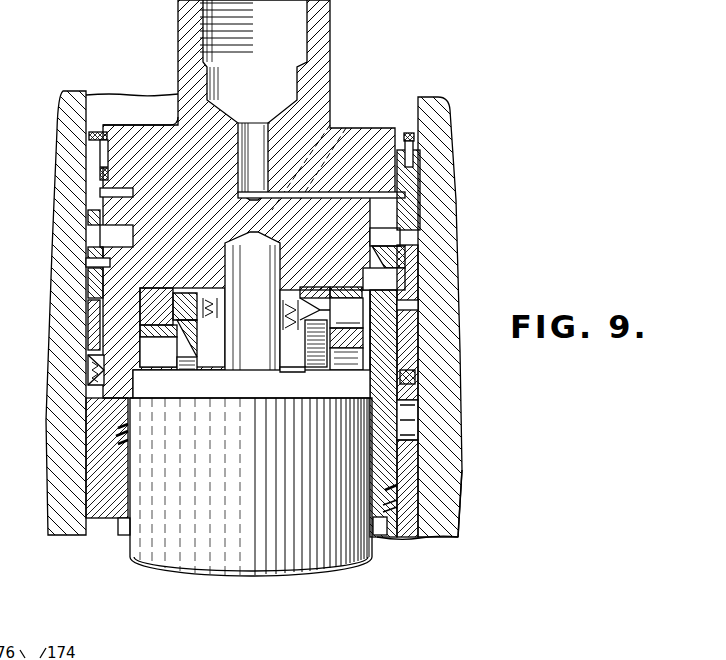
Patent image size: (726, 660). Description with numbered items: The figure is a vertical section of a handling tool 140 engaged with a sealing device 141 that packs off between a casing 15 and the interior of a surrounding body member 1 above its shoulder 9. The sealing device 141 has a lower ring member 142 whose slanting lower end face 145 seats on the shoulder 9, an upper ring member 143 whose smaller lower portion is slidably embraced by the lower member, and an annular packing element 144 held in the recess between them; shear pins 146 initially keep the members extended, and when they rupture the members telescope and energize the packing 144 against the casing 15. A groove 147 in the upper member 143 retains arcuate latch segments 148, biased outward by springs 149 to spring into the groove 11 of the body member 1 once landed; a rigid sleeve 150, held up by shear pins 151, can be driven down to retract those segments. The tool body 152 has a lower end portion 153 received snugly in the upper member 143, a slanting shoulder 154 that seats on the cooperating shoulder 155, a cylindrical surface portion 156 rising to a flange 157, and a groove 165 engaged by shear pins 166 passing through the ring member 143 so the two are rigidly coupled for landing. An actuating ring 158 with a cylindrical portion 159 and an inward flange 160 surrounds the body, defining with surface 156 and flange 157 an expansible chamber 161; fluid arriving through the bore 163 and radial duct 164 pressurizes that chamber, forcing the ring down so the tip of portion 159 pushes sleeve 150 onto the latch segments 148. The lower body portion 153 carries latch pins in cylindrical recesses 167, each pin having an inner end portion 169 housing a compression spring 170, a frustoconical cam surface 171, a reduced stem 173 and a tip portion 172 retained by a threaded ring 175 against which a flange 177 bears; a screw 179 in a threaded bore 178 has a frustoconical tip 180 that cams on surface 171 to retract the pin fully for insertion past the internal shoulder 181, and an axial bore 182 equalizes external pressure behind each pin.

The body member 1 is at (466, 463).
The shoulder 9 is at (395, 492).
The groove 11 is at (424, 393).
The casing 15 is at (212, 571).
The handling tool 140 is at (373, 45).
The sealing device 141 is at (136, 387).
The lower ring member 142 is at (128, 491).
The upper ring member 143 is at (371, 373).
The annular packing element 144 is at (128, 446).
The frustoconical lower end face 145 is at (391, 510).
The shear pins 146 is at (90, 406).
The groove 147 is at (404, 355).
The latch segments 148 is at (418, 378).
The springs 149 is at (110, 380).
The sleeve 150 is at (419, 280).
The shear pins 151 is at (419, 307).
The main body 152 is at (270, 199).
The lower end portion 153 is at (289, 373).
The shoulder 154 is at (378, 258).
The shoulder 155 is at (132, 250).
The cylindrical outer surface portion 156 is at (116, 236).
The flange 157 is at (100, 188).
The actuating ring 158 is at (426, 204).
The cylindrical portion 159 is at (414, 171).
The flange 160 is at (385, 237).
The expansible chamber 161 is at (126, 193).
The bore 163 is at (246, 164).
The radial duct 164 is at (320, 192).
The groove 165 is at (362, 284).
The shear pins 166 is at (150, 263).
The cylindrical recesses 167 is at (150, 329).
The inner circular end portion 169 is at (310, 330).
The compression spring 170 is at (288, 300).
The cam surface 171 is at (194, 293).
The tip portion 172 is at (347, 313).
The stem 173 is at (170, 288).
The threaded ring 175 is at (344, 338).
The flange 177 is at (328, 287).
The threaded bores 178 is at (189, 371).
The screw 179 is at (320, 366).
The frusto-conical tip portion 180 is at (296, 332).
The internal shoulder 181 is at (384, 279).
The axial bore 182 is at (148, 318).